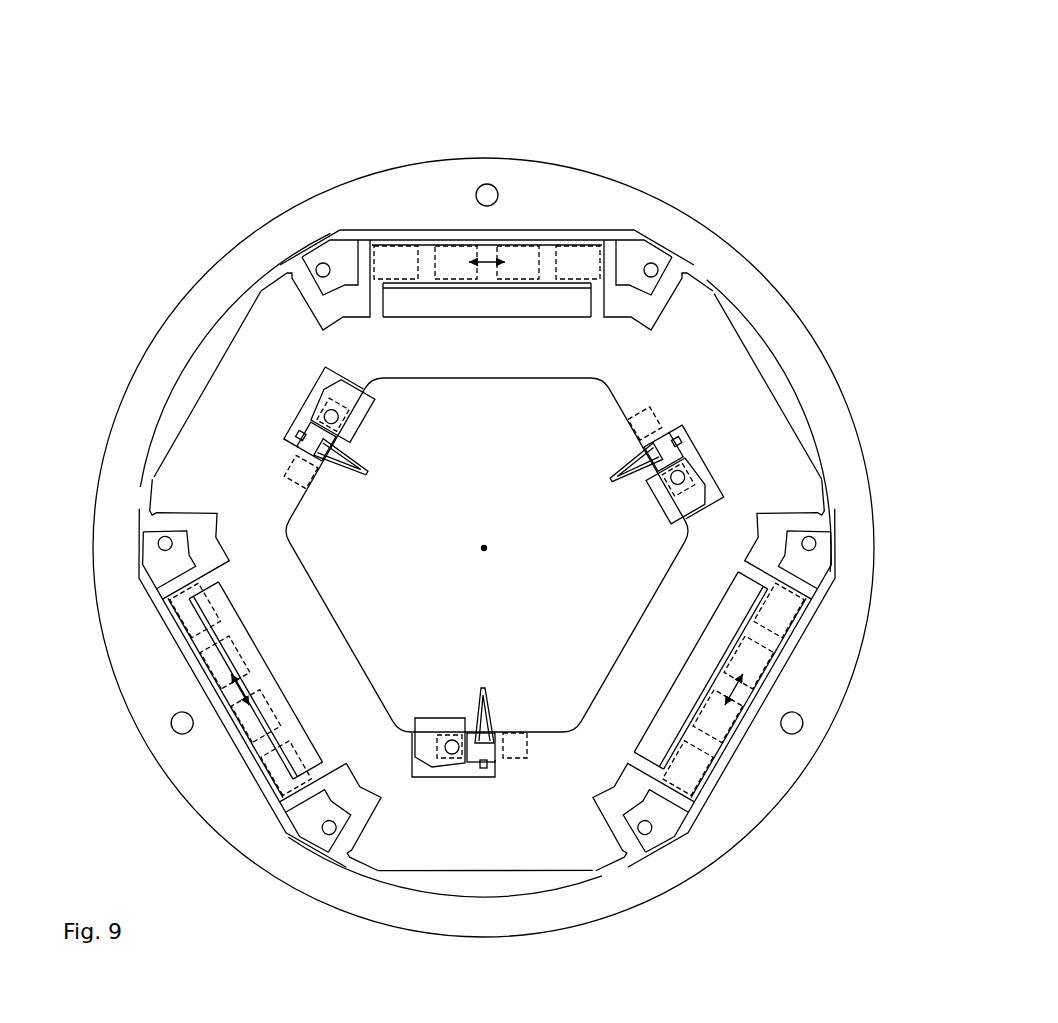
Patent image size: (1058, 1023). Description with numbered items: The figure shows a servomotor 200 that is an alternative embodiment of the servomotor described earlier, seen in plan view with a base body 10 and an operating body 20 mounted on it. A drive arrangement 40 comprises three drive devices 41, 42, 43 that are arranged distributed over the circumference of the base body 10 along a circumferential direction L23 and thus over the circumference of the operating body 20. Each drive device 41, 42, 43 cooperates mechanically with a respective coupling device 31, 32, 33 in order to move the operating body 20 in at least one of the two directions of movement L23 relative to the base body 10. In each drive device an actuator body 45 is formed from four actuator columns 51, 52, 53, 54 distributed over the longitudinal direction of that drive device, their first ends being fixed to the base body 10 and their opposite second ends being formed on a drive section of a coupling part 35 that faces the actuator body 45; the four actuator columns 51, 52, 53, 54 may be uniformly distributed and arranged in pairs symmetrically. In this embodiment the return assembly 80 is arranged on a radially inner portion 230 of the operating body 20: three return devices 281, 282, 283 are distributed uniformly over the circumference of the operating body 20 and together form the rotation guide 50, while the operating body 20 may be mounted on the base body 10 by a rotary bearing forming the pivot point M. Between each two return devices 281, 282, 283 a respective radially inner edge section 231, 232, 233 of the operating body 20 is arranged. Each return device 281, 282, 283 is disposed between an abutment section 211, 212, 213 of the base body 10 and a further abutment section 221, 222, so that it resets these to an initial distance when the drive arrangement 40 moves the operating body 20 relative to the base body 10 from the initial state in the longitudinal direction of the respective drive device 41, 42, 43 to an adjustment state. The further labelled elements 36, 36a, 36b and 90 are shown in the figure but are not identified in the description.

The servomotor 200 is at (800, 106).
The base body 10 is at (681, 906).
The operating body 20 is at (540, 876).
The coupling device 31 is at (197, 397).
The coupling device 32 is at (760, 372).
The coupling device 33 is at (520, 873).
The circumferential direction L23 is at (745, 381).
The drive arrangement 40 is at (316, 117).
The drive device 41 is at (225, 727).
The drive device 42 is at (463, 228).
The drive device 43 is at (770, 643).
The coupling part 35 is at (228, 598).
The clamping jaw 36 is at (571, 300).
The first end of clamping jaw 36a is at (385, 297).
The second end of clamping jaw 36b is at (578, 312).
The actuator body 45 is at (500, 283).
The rotation guide 50 is at (684, 426).
The actuator column 51 is at (385, 258).
The actuator column 52 is at (450, 250).
The actuator column 53 is at (515, 265).
The actuator column 54 is at (585, 262).
The return assembly 80 is at (372, 460).
The movement direction 90 is at (627, 392).
The pivot point M is at (478, 542).
The radially inner portion 230 is at (569, 383).
The radially inner edge section 231 is at (345, 607).
The radially inner edge section 232 is at (480, 378).
The radially inner edge section 233 is at (633, 624).
The abutment section 211 is at (485, 770).
The abutment section 212 is at (292, 428).
The abutment section 213 is at (672, 430).
The abutment section 221 is at (492, 742).
The abutment section 222 is at (318, 465).
The return device 281 is at (487, 688).
The return device 282 is at (362, 470).
The return device 283 is at (608, 478).